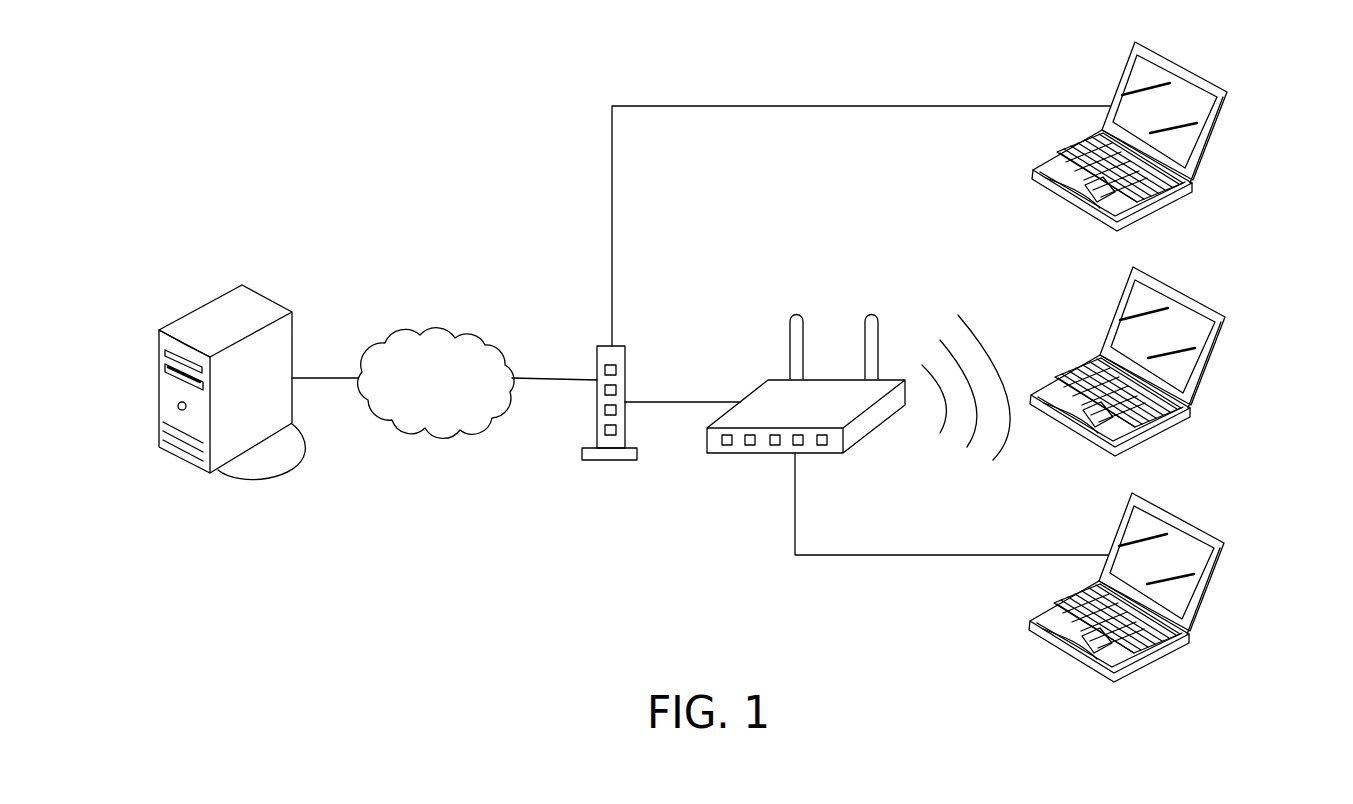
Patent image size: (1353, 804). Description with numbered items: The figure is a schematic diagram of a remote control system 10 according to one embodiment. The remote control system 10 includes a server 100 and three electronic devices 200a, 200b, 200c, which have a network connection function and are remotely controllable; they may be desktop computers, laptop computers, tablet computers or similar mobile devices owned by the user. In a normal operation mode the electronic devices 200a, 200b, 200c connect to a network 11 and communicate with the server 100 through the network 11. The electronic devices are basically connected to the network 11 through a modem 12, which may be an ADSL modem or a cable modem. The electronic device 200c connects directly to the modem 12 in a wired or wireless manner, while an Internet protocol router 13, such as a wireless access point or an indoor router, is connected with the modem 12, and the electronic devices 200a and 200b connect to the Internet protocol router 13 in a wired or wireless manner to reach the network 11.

The remote control system 10 is at (1313, 733).
The server 100 is at (272, 298).
The network 11 is at (483, 332).
The modem 12 is at (608, 462).
The Internet protocol router 13 is at (730, 454).
The electronic device 200a is at (1208, 370).
The electronic device 200b is at (1205, 595).
The electronic device 200c is at (1208, 142).